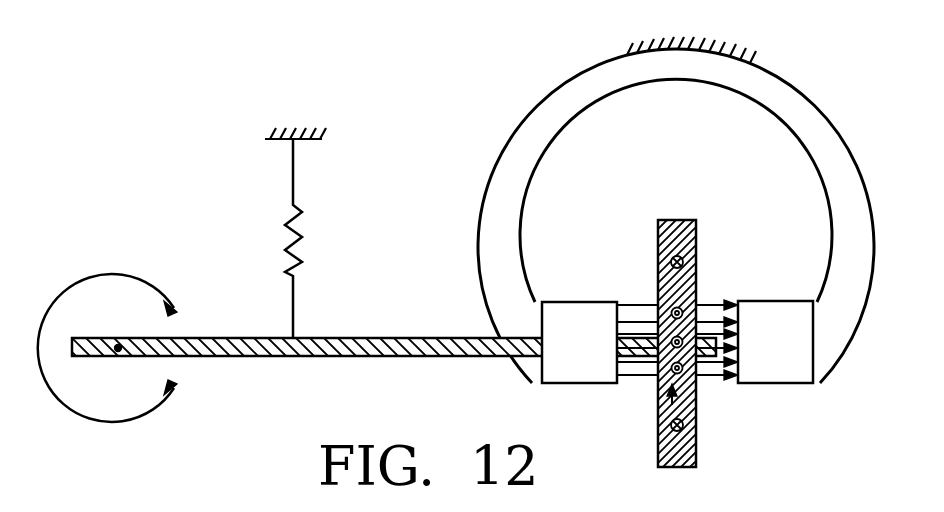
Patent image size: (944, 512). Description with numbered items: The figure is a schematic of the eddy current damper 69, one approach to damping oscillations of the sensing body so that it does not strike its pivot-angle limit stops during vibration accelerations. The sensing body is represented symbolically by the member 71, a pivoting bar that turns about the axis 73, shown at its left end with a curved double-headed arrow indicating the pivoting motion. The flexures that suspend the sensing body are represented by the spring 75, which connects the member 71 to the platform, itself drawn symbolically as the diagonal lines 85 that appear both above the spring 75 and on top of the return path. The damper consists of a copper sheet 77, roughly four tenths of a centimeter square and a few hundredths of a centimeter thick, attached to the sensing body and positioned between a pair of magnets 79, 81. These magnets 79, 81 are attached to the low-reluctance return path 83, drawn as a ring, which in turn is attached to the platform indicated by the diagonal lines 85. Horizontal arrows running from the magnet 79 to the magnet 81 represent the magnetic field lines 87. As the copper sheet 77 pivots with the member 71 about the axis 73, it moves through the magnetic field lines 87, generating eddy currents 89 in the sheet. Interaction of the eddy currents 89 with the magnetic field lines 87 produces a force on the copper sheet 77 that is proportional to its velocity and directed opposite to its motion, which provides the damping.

The eddy current damper 69 is at (458, 226).
The member 71 is at (297, 360).
The axis 73 is at (118, 345).
The spring 75 is at (287, 232).
The copper sheet 77 is at (698, 430).
The magnet 79 is at (572, 300).
The magnet 81 is at (772, 300).
The low-reluctance return path 83 is at (672, 80).
The diagonal lines 85 is at (626, 50).
The magnetic field lines 87 is at (707, 302).
The eddy currents 89 is at (663, 405).